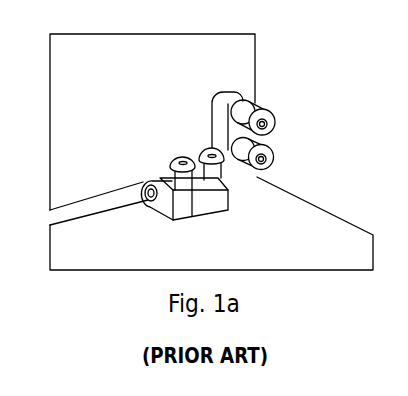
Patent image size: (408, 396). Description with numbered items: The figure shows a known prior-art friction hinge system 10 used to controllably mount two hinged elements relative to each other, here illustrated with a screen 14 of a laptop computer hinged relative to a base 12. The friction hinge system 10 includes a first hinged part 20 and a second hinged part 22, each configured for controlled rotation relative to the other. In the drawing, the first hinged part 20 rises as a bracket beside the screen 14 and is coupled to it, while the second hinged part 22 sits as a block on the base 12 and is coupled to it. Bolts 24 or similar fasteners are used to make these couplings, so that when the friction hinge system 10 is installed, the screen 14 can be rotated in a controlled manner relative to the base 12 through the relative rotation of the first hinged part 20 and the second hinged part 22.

The friction hinge system 10 is at (292, 86).
The base 12 is at (260, 252).
The screen 14 is at (77, 100).
The first hinged part 20 is at (222, 127).
The second hinged part 22 is at (143, 180).
The bolts 24 is at (252, 165).